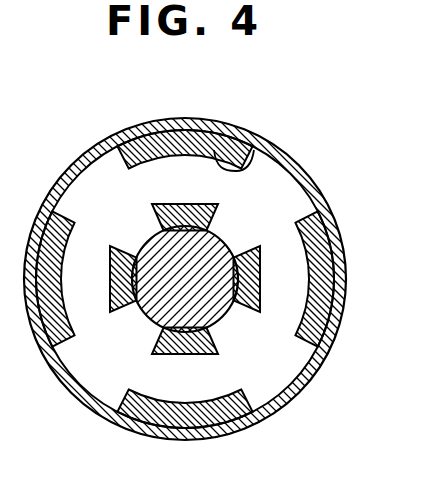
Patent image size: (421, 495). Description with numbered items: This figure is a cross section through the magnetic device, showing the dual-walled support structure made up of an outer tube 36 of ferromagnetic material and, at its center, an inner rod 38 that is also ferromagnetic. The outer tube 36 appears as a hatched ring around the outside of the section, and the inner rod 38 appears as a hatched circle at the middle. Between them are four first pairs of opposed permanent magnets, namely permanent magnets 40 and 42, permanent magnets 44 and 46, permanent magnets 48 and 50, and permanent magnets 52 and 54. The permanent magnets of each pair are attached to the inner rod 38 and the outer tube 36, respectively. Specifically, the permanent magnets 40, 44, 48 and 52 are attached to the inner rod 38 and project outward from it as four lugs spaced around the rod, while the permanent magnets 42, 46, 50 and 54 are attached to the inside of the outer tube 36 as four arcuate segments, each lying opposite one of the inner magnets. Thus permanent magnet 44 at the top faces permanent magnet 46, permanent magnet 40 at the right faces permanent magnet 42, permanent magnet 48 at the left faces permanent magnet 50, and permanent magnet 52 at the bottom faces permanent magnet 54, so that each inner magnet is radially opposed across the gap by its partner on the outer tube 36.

The outer tube 36 is at (304, 169).
The inner rod 38 is at (220, 243).
The permanent magnet 40 is at (262, 278).
The permanent magnet 42 is at (306, 306).
The permanent magnet 44 is at (183, 203).
The permanent magnet 46 is at (256, 150).
The permanent magnet 48 is at (111, 268).
The permanent magnet 50 is at (65, 311).
The permanent magnet 52 is at (178, 354).
The permanent magnet 54 is at (213, 401).